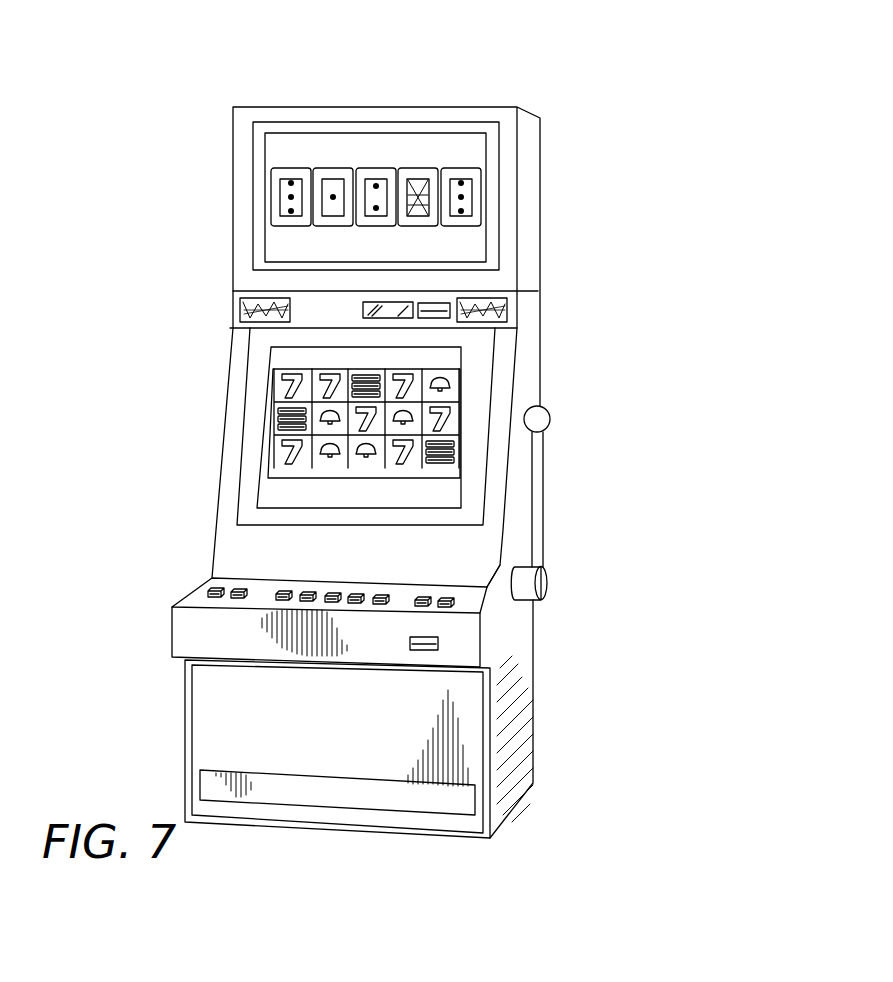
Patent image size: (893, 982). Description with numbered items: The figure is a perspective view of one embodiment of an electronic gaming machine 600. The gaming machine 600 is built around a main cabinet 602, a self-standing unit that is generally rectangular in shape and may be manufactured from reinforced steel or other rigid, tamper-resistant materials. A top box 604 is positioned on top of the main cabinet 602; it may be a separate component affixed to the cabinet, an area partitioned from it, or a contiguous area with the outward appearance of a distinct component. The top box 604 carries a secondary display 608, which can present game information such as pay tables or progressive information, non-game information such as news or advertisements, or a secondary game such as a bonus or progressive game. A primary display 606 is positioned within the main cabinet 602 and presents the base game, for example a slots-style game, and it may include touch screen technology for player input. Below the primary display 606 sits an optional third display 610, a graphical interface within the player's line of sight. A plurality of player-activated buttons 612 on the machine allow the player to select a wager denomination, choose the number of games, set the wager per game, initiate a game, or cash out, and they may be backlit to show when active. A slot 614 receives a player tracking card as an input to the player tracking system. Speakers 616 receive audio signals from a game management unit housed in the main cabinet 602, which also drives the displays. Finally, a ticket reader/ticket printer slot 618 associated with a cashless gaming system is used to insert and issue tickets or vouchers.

The electronic gaming machine 600 is at (638, 107).
The main cabinet 602 is at (167, 290).
The top box 604 is at (573, 102).
The primary display 606 is at (463, 390).
The secondary display 608 is at (307, 150).
The third display 610 is at (390, 303).
The player-activated buttons 612 is at (240, 588).
The slot for receiving a player tracking card 614 is at (443, 318).
The speakers 616 is at (241, 310).
The ticket reader/ticket printer slot 618 is at (438, 645).